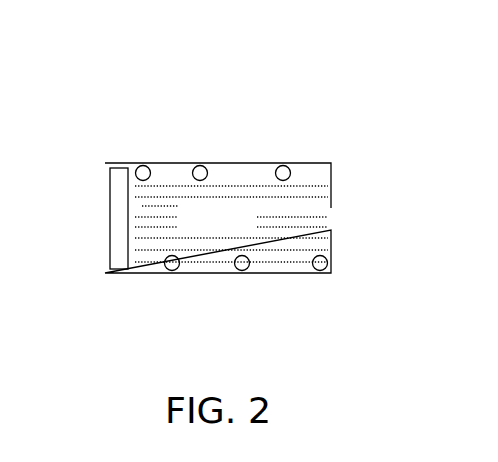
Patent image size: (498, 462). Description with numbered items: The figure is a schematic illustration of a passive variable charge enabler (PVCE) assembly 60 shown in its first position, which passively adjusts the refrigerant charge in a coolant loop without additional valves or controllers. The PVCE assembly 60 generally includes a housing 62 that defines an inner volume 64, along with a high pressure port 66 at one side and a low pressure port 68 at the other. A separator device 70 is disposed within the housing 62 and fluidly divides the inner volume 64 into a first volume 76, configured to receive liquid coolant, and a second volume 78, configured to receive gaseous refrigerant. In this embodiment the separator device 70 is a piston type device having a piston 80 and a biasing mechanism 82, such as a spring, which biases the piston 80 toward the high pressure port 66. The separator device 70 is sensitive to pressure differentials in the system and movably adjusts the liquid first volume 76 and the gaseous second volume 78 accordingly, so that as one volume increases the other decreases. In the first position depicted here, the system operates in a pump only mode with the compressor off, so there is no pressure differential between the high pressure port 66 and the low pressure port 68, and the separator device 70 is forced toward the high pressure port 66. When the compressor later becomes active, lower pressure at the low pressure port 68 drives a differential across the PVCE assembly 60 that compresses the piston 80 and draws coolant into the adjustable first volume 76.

The passive variable charge enabler (PVCE) assembly 60 is at (293, 122).
The housing 62 is at (210, 273).
The inner volume 64 is at (238, 178).
The high pressure port 66 is at (105, 214).
The low pressure port 68 is at (331, 215).
The separator device 70 is at (116, 274).
The first volume 76 is at (106, 170).
The second volume 78 is at (272, 252).
The piston 80 is at (118, 172).
The biasing mechanism 82 is at (200, 166).